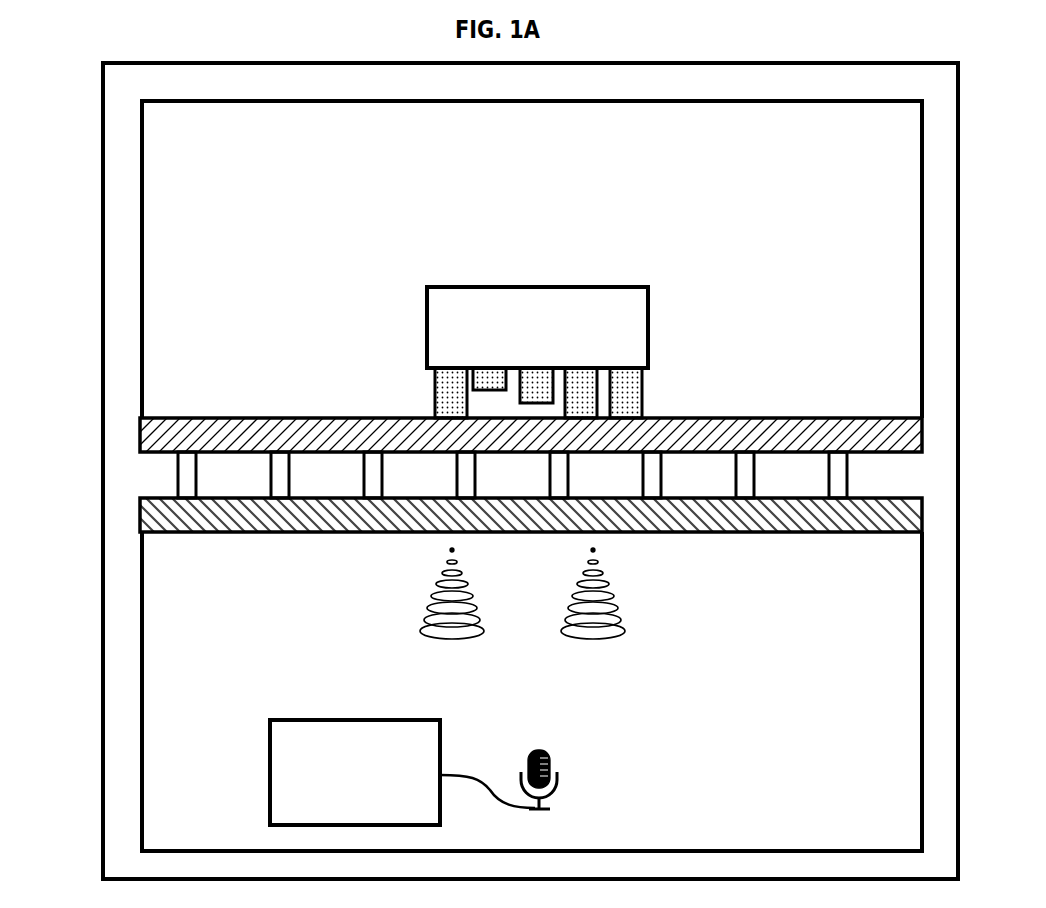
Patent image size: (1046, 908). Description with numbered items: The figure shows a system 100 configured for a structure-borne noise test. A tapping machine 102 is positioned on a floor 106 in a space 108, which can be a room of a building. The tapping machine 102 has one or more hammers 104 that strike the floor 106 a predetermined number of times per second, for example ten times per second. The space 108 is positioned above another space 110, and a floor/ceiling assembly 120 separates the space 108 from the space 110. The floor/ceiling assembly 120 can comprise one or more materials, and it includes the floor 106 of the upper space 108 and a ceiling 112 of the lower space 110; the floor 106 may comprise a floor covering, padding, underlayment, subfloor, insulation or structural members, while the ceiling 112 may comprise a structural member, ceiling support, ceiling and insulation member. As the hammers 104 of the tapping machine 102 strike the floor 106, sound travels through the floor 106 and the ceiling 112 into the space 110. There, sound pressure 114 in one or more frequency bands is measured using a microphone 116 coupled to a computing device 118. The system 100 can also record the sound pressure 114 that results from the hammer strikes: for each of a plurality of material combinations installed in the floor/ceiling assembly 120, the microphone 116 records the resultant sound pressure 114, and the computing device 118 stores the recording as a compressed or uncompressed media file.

The system 100 is at (817, 29).
The tapping machine 102 is at (600, 287).
The hammers 104 is at (643, 393).
The floor 106 is at (737, 418).
The space 108 is at (903, 147).
The space 110 is at (903, 581).
The ceiling 112 is at (797, 533).
The sound pressure 114 is at (413, 590).
The microphone 116 is at (555, 785).
The computing device 118 is at (440, 752).
The floor/ceiling assembly 120 is at (495, 474).